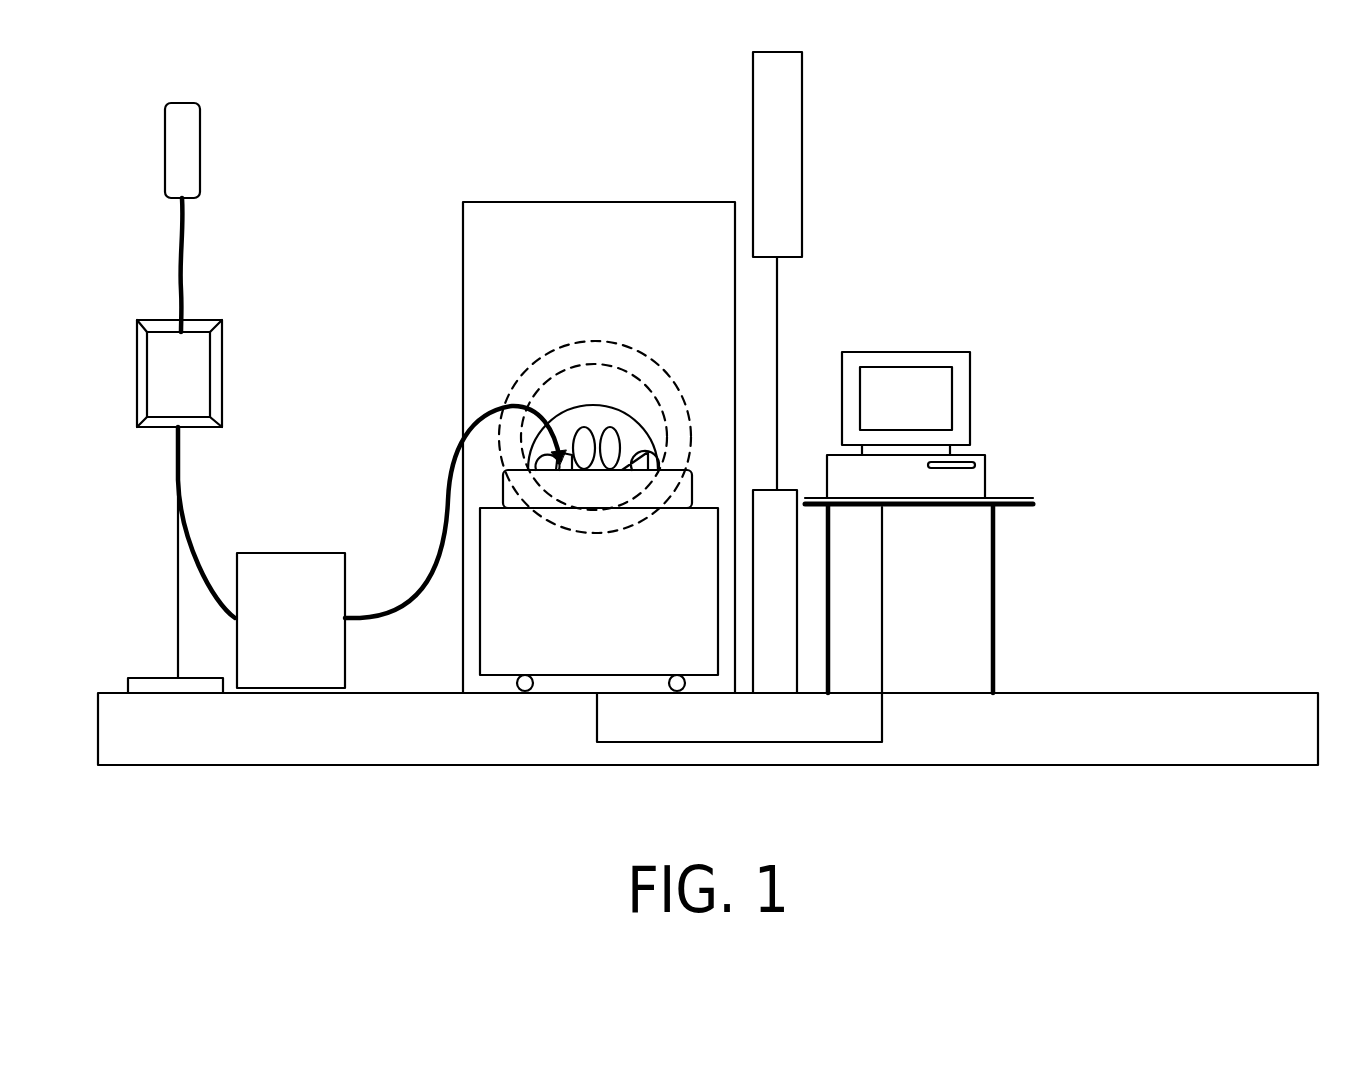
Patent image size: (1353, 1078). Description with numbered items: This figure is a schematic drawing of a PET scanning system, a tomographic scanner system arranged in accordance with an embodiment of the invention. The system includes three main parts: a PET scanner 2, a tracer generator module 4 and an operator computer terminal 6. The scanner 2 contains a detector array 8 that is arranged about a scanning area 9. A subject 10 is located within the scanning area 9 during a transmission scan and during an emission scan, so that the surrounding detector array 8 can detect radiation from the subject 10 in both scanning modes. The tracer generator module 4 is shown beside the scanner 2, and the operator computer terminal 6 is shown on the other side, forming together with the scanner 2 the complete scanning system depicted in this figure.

The PET scanner 2 is at (567, 202).
The tracer generator module 4 is at (302, 623).
The operator computer terminal 6 is at (937, 352).
The detector array 8 is at (568, 340).
The scanning area 9 is at (597, 388).
The subject 10 is at (612, 428).